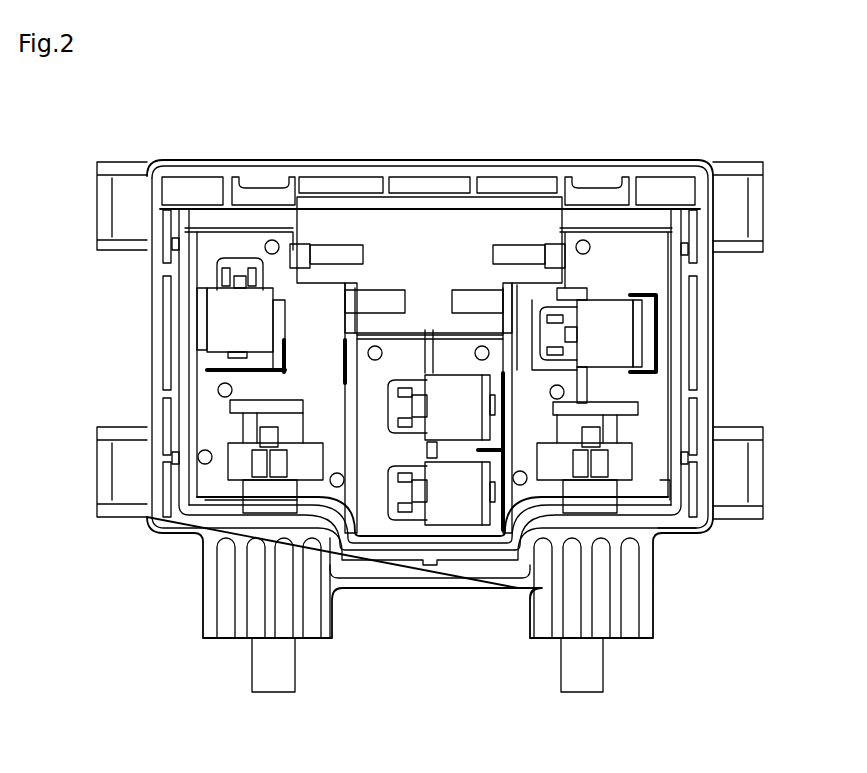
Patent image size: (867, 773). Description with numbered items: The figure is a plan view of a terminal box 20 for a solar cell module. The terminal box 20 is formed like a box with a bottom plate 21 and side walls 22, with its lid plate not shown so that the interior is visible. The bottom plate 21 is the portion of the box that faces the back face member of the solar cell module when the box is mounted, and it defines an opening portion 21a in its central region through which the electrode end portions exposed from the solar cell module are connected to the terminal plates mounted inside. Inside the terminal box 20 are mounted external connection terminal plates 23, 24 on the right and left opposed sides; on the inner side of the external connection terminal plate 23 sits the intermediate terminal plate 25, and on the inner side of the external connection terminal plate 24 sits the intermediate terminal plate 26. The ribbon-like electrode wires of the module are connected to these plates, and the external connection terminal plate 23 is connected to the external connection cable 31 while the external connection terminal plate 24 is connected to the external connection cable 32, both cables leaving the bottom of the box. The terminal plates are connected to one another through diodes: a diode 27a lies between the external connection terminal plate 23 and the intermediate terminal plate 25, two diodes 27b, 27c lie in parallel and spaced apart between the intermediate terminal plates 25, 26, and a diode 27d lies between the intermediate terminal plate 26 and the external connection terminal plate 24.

The terminal box 20 is at (580, 120).
The bottom plate 21 is at (287, 213).
The opening portion 21a is at (423, 220).
The side walls 22 is at (716, 321).
The external connection terminal plate 23 is at (200, 245).
The external connection terminal plate 24 is at (652, 263).
The intermediate terminal plate 25 is at (370, 520).
The intermediate terminal plate 26 is at (449, 357).
The diode 27a is at (233, 321).
The diode 27b is at (438, 404).
The diode 27c is at (455, 513).
The diode 27d is at (624, 343).
The external connection cable 31 is at (262, 660).
The external connection cable 32 is at (595, 655).